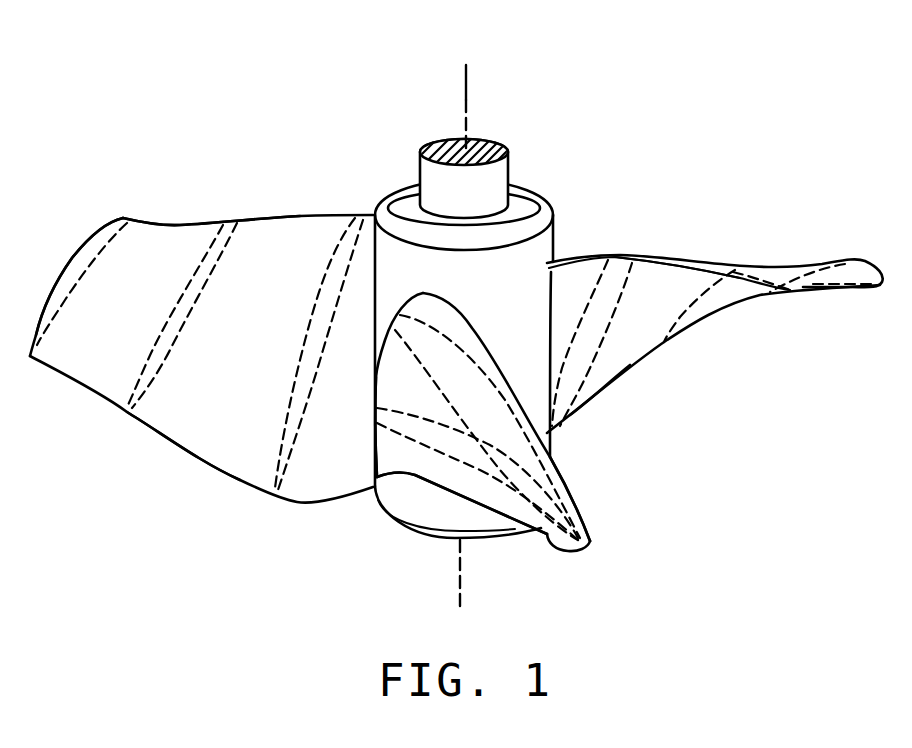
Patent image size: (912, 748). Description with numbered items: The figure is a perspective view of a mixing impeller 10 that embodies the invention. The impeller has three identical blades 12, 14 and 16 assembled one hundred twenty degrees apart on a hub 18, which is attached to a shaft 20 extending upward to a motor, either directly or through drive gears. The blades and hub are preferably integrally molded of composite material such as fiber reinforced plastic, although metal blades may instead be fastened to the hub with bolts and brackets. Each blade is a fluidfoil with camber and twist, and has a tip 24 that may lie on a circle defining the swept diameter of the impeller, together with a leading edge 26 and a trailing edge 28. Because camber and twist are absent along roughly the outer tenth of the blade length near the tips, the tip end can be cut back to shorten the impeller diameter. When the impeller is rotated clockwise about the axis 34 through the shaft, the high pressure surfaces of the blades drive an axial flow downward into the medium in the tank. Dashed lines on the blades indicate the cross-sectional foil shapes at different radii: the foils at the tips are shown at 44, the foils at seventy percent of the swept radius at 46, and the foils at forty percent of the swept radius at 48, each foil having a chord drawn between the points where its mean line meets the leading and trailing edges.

The mixing impeller 10 is at (692, 153).
The blade 12 is at (617, 347).
The blade 14 is at (533, 455).
The blade 16 is at (287, 240).
The hub 18 is at (553, 250).
The shaft 20 is at (510, 183).
The tips 24 is at (85, 255).
The leading edges 26 is at (172, 223).
The trailing edges 28 is at (203, 460).
The axis 34 is at (466, 87).
The foils at the tips 44 is at (102, 248).
The foils at 0.7 R 46 is at (212, 270).
The foils at 0.4 R 48 is at (430, 343).